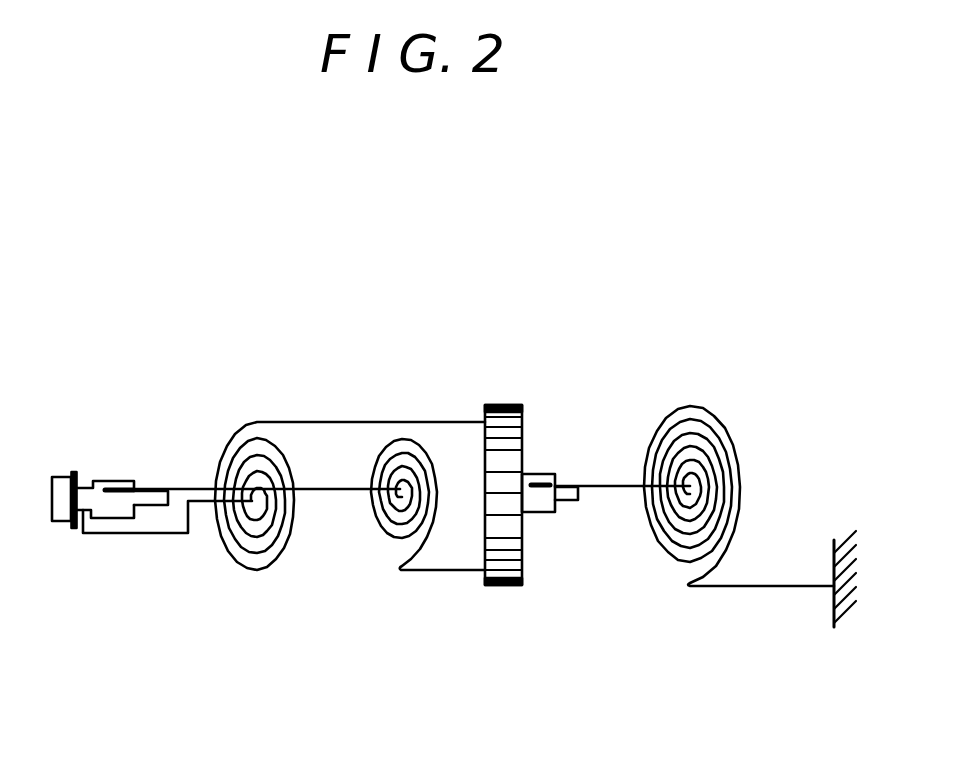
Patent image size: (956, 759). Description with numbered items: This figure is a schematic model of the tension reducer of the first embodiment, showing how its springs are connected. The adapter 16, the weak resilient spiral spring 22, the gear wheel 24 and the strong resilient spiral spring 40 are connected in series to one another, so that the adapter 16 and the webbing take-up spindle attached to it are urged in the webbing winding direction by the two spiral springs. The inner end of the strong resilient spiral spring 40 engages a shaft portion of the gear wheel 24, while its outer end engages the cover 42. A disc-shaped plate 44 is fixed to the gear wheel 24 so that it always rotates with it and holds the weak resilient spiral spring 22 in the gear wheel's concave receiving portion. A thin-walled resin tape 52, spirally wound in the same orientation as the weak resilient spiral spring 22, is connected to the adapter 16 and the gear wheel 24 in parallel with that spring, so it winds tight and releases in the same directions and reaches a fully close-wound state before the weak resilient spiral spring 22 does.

The adapter 16 is at (110, 484).
The weak resilient spiral spring 22 is at (400, 440).
The gear wheel 24 is at (512, 456).
The plate 44 is at (498, 405).
The strong resilient spiral spring 40 is at (690, 410).
The cover 42 is at (834, 606).
The tape 52 is at (262, 569).